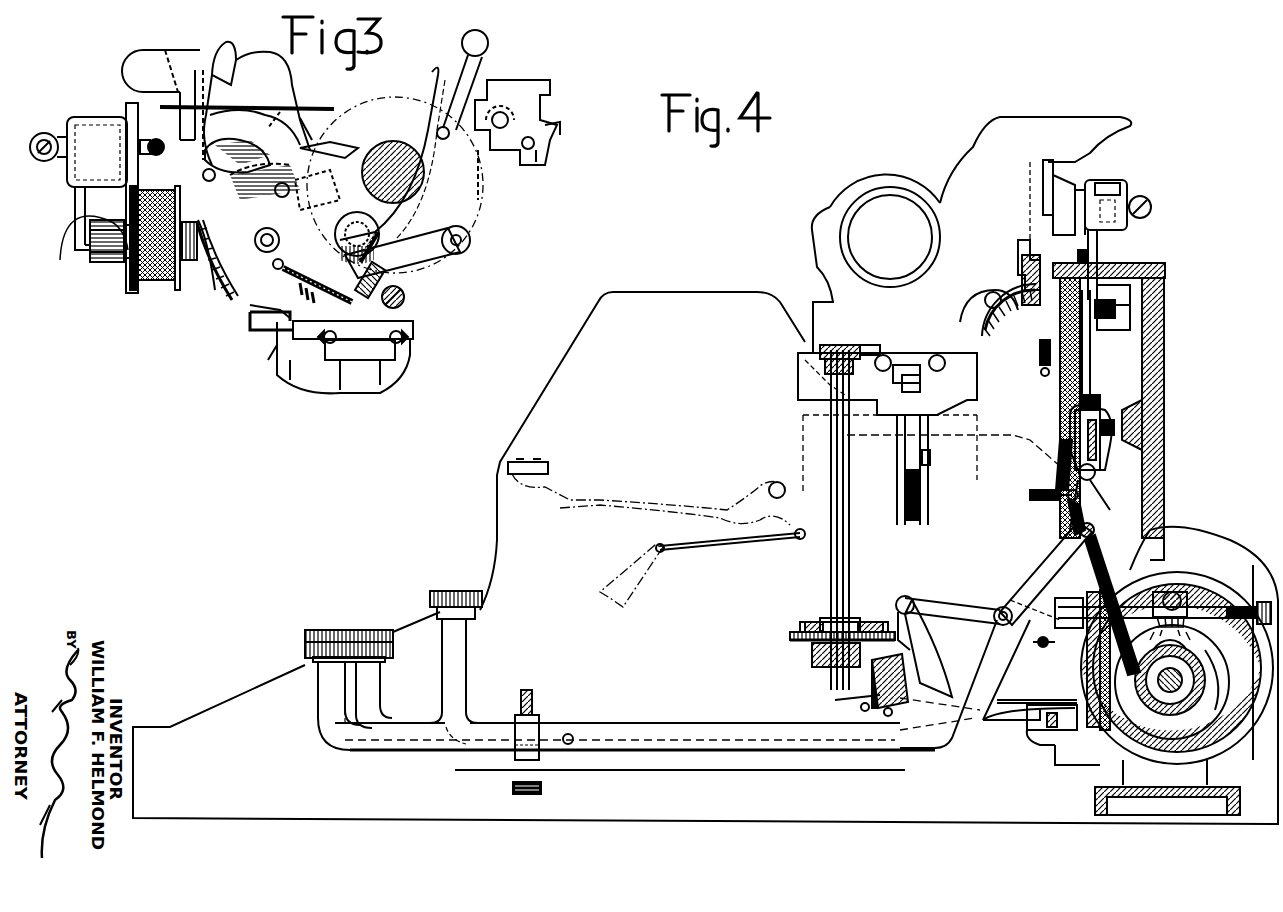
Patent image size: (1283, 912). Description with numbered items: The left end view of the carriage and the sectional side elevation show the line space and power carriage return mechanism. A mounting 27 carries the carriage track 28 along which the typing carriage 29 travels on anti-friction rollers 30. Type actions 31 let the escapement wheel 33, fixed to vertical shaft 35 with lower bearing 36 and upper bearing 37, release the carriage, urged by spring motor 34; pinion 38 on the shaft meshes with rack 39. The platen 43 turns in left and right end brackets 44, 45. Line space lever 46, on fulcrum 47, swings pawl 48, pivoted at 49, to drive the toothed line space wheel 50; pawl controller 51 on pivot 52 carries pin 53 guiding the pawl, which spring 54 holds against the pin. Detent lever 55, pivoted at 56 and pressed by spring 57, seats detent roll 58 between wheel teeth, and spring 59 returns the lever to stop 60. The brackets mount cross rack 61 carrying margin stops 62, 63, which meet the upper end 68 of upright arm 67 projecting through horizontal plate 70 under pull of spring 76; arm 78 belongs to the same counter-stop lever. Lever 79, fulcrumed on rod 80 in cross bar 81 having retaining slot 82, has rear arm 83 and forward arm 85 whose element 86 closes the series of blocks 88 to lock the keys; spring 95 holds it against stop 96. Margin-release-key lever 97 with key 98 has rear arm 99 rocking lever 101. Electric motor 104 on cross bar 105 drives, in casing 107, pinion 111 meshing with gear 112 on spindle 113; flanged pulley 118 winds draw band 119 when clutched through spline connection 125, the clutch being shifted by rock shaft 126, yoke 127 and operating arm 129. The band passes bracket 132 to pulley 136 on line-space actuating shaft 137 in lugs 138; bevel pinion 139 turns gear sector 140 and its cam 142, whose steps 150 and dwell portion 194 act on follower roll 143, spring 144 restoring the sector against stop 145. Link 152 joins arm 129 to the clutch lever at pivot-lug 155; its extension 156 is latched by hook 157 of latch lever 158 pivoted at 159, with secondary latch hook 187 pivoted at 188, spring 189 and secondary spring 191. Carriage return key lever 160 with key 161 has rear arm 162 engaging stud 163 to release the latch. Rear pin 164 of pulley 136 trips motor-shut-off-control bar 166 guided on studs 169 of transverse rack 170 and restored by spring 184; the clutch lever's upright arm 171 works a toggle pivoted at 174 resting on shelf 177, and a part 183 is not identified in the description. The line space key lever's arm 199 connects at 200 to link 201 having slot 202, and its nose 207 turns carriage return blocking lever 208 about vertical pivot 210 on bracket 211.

In FIG. 3, the mounting 27 is at (305, 388).
In FIG. 4, the mounting 27 is at (800, 413).
In FIG. 4, the carriage track 28 is at (970, 402).
In FIG. 3, the typing carriage 29 is at (396, 95).
In FIG. 4, the typing carriage 29 is at (816, 209).
In FIG. 3, the anti-friction rollers 30 is at (405, 340).
In FIG. 4, the anti-friction rollers 30 is at (886, 355).
In FIG. 4, the type actions 31 is at (620, 493).
In FIG. 4, the escapement wheel 33 is at (798, 632).
In FIG. 4, the spring motor 34 is at (930, 505).
In FIG. 4, the vertical shaft 35 is at (828, 592).
In FIG. 4, the lower bearing 36 is at (815, 668).
In FIG. 4, the upper bearing 37 is at (820, 365).
In FIG. 4, the pinion 38 is at (818, 350).
In FIG. 4, the rack 39 is at (878, 348).
In FIG. 4, the platen 43 is at (858, 178).
In FIG. 3, the left end bracket 44 is at (123, 72).
In FIG. 4, the right end bracket 45 is at (965, 155).
In FIG. 3, the line space lever 46 is at (555, 125).
In FIG. 3, the fulcrum 47 is at (503, 112).
In FIG. 3, the pawl 48 is at (271, 200).
In FIG. 3, the pivot 49 is at (372, 230).
In FIG. 3, the toothed line space wheel 50 is at (470, 200).
In FIG. 3, the line space pawl controller 51 is at (276, 103).
In FIG. 3, the pivot 52 is at (224, 144).
In FIG. 3, the pin 53 is at (310, 194).
In FIG. 3, the spring 54 is at (406, 297).
In FIG. 3, the line-space detent lever 55 is at (440, 262).
In FIG. 3, the pivot 56 is at (415, 333).
In FIG. 3, the spring 57 is at (270, 345).
In FIG. 3, the detent roll 58 is at (470, 246).
In FIG. 3, the spring 59 is at (536, 166).
In FIG. 3, the stop 60 is at (548, 150).
In FIG. 3, the cross rack 61 is at (190, 70).
In FIG. 4, the cross rack 61 is at (1055, 182).
In FIG. 4, the margin stop 62 is at (1058, 160).
In FIG. 3, the margin stop 63 is at (168, 56).
In FIG. 4, the upright arm 67 is at (1045, 345).
In FIG. 4, the upper end 68 is at (1020, 235).
In FIG. 4, the horizontal plate 70 is at (1167, 272).
In FIG. 4, the spring 76 is at (1043, 378).
In FIG. 4, the arm 78 is at (1066, 732).
In FIG. 4, the lever 79 is at (815, 768).
In FIG. 4, the rod 80 is at (858, 708).
In FIG. 4, the framework cross bar 81 is at (910, 660).
In FIG. 4, the lever-retaining slot 82 is at (892, 714).
In FIG. 4, the rear arm 83 is at (1010, 705).
In FIG. 4, the forward arm 85 is at (705, 772).
In FIG. 4, the element 86 is at (515, 765).
In FIG. 4, the blocks 88 is at (512, 788).
In FIG. 4, the spring 95 is at (835, 700).
In FIG. 4, the stop 96 is at (538, 700).
In FIG. 4, the margin-release-key lever 97 is at (468, 680).
In FIG. 4, the key 98 is at (455, 590).
In FIG. 4, the rear arm 99 is at (997, 748).
In FIG. 4, the lever 101 is at (1045, 752).
In FIG. 4, the electric motor 104 is at (1232, 540).
In FIG. 4, the cross bar 105 is at (1148, 808).
In FIG. 4, the casing 107 is at (1248, 725).
In FIG. 4, the pinion 111 is at (1188, 612).
In FIG. 4, the gear 112 is at (1200, 612).
In FIG. 4, the spindle 113 is at (1148, 700).
In FIG. 4, the flanged pulley 118 is at (1150, 710).
In FIG. 3, the draw band 119 is at (130, 290).
In FIG. 4, the spline connection 125 is at (1210, 698).
In FIG. 4, the rock shaft 126 is at (1262, 575).
In FIG. 4, the yoke 127 is at (1100, 748).
In FIG. 4, the operating arm 129 is at (1000, 610).
In FIG. 4, the bracket 132 is at (1148, 490).
In FIG. 3, the pulley 136 is at (140, 275).
In FIG. 3, the line-space actuating shaft 137 is at (240, 312).
In FIG. 3, the lugs 138 is at (248, 232).
In FIG. 3, the bevel pinion 139 is at (188, 268).
In FIG. 4, the bevel pinion 139 is at (1020, 256).
In FIG. 3, the beveled gear sector 140 is at (212, 295).
In FIG. 4, the beveled gear sector 140 is at (1008, 348).
In FIG. 3, the cam 142 is at (318, 153).
In FIG. 3, the cam follower roll 143 is at (362, 265).
In FIG. 3, the spring 144 is at (312, 279).
In FIG. 3, the stop 145 is at (219, 186).
In FIG. 3, the steps 150 is at (388, 146).
In FIG. 4, the link 152 is at (1060, 555).
In FIG. 4, the pivot-lug 155 is at (1100, 395).
In FIG. 4, the extension 156 is at (1115, 458).
In FIG. 4, the latch hook 157 is at (1100, 405).
In FIG. 4, the latch lever 158 is at (1078, 540).
In FIG. 4, the pivot 159 is at (1070, 528).
In FIG. 4, the carriage return key lever 160 is at (662, 730).
In FIG. 4, the key 161 is at (365, 630).
In FIG. 4, the rear arm 162 is at (960, 610).
In FIG. 4, the stud 163 is at (1000, 598).
In FIG. 3, the rear pin 164 is at (110, 262).
In FIG. 3, the motor-shut-off-control bar 166 is at (128, 108).
In FIG. 4, the motor-shut-off-control bar 166 is at (1105, 180).
In FIG. 3, the supporting studs 169 is at (158, 139).
In FIG. 4, the supporting studs 169 is at (1048, 200).
In FIG. 4, the transverse rack 170 is at (1152, 200).
In FIG. 4, the upright arm 171 is at (1095, 365).
In FIG. 4, the pivot 174 is at (1100, 300).
In FIG. 4, the shelf 177 is at (1120, 322).
In FIG. 4, the rod 183 is at (1098, 252).
In FIG. 3, the spring 184 is at (162, 156).
In FIG. 4, the secondary latch hook 187 is at (1062, 445).
In FIG. 4, the pivot 188 is at (1098, 478).
In FIG. 4, the spring 189 is at (1040, 490).
In FIG. 4, the secondary spring 191 is at (1118, 430).
In FIG. 3, the dwell portion 194 is at (301, 118).
In FIG. 4, the arm 199 is at (920, 640).
In FIG. 4, the connection 200 is at (900, 597).
In FIG. 4, the link 201 is at (915, 580).
In FIG. 4, the slot 202 is at (1048, 648).
In FIG. 4, the nose 207 is at (898, 608).
In FIG. 4, the carriage return blocking lever 208 is at (800, 642).
In FIG. 4, the vertical pivot 210 is at (897, 630).
In FIG. 4, the bracket 211 is at (916, 635).